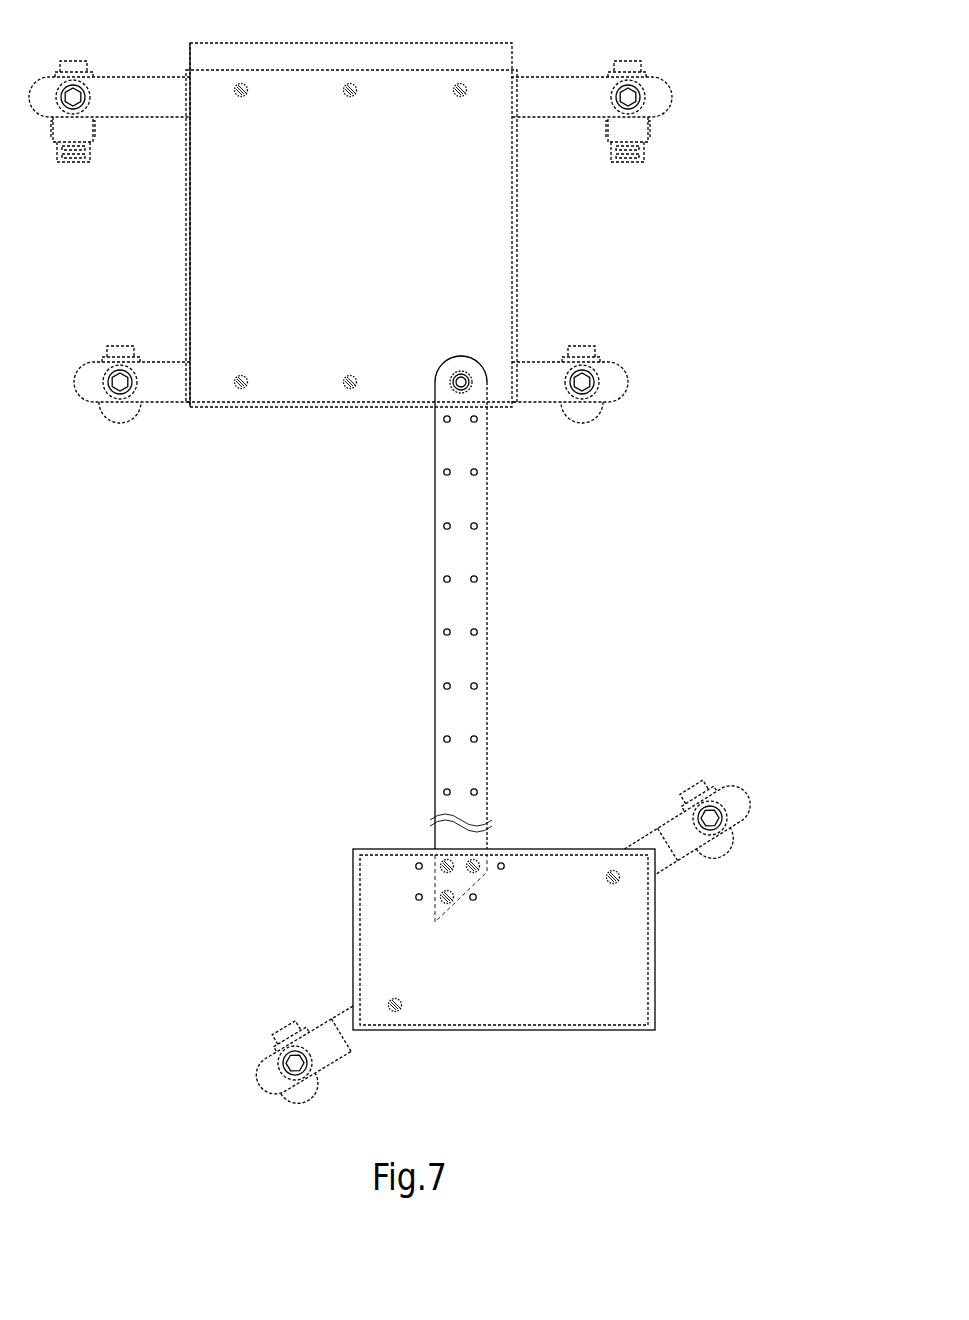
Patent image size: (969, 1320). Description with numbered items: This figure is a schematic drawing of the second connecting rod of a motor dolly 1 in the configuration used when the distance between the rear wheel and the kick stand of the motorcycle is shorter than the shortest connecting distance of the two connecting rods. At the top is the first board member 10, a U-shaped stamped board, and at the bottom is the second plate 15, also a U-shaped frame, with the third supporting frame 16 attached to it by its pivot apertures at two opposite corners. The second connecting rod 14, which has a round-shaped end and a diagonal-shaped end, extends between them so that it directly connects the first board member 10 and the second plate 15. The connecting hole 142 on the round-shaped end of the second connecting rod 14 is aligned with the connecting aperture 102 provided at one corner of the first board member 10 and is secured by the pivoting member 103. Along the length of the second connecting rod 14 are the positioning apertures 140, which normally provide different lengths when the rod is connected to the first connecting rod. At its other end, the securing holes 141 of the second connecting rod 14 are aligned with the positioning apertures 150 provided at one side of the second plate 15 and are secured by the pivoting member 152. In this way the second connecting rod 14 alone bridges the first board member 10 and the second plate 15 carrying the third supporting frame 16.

The motor dolly 1 is at (238, 570).
The first board member 10 is at (527, 221).
The second connecting rod 14 is at (471, 565).
The positioning apertures 140 is at (479, 632).
The securing holes 141 is at (476, 862).
The connecting hole 142 is at (455, 389).
The second plate 15 is at (528, 889).
The positioning apertures 150 is at (417, 861).
The pivoting member 152 is at (452, 901).
The third supporting frame 16 is at (741, 818).
The connecting aperture 102 is at (468, 393).
The pivoting member 103 is at (467, 376).